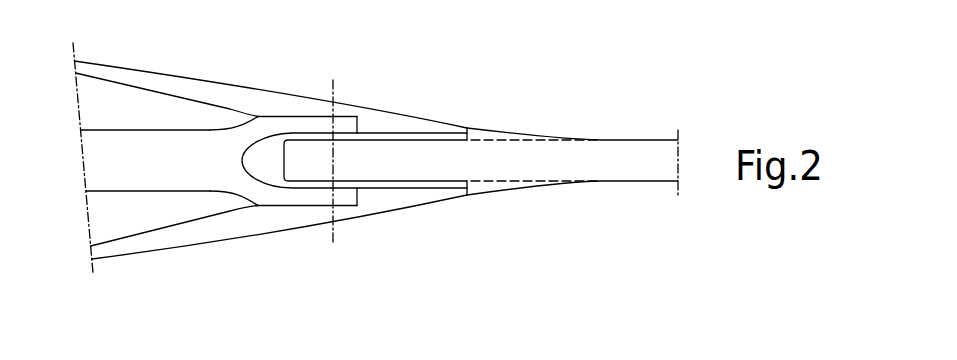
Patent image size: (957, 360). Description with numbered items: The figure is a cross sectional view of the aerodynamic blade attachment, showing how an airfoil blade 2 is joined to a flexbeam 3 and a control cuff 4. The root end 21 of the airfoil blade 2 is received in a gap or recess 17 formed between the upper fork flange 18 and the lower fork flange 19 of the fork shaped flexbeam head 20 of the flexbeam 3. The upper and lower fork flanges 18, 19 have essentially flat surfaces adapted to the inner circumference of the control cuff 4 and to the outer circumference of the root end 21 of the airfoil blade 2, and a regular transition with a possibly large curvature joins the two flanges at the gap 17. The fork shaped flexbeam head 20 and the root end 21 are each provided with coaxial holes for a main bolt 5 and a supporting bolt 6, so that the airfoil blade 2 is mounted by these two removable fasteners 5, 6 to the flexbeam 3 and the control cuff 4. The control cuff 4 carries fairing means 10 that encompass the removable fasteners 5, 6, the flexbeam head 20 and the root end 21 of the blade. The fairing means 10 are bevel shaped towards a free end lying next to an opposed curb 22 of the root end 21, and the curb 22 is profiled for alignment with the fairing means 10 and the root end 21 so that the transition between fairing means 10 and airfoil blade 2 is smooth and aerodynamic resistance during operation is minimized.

The airfoil blade 2 is at (597, 160).
The flexbeam 3 is at (97, 163).
The control cuff 4 is at (211, 83).
The main bolt 5 is at (380, 175).
The supporting bolt 6 is at (333, 230).
The fairing means 10 is at (414, 117).
The gap 17 is at (268, 158).
The upper fork flange 18 is at (322, 105).
The fork shaped flexbeam head 20 is at (350, 125).
The lower fork flange 19 is at (297, 199).
The root end 21 is at (301, 152).
The curb 22 is at (476, 135).